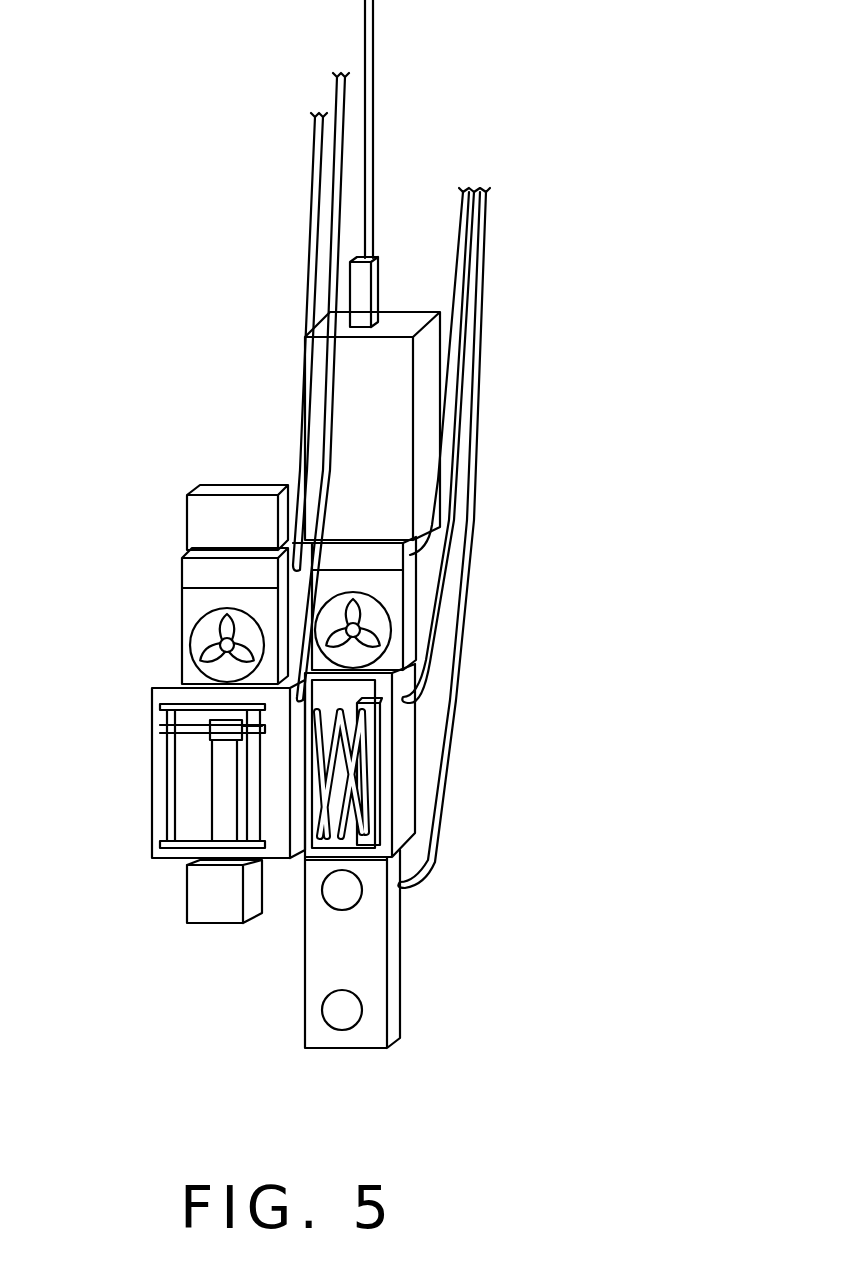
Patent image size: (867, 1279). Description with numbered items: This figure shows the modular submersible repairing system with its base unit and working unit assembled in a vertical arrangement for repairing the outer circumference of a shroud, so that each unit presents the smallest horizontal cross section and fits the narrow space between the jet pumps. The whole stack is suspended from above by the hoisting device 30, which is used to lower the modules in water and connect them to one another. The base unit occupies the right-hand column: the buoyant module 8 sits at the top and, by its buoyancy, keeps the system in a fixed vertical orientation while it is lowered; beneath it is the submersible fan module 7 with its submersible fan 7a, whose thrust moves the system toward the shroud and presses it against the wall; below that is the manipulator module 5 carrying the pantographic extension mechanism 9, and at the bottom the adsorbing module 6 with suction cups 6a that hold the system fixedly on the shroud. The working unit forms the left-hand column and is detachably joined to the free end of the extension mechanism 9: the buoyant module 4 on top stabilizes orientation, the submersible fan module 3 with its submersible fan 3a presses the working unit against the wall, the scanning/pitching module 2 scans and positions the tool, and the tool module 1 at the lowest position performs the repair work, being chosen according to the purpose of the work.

The hoisting device 30 is at (373, 22).
The buoyant module 8 is at (400, 418).
The buoyant module 4 is at (187, 520).
The submersible fan module 3 is at (180, 612).
The submersible fan 3a is at (203, 648).
The submersible fan module 7 is at (410, 637).
The submersible fan 7a is at (370, 612).
The manipulator module 5 is at (405, 772).
The pantographic extension mechanism 9 is at (323, 870).
The adsorbing module 6 is at (398, 923).
The suction cups 6a is at (352, 1013).
The scanning/pitching module 2 is at (148, 833).
The tool module 1 is at (187, 915).